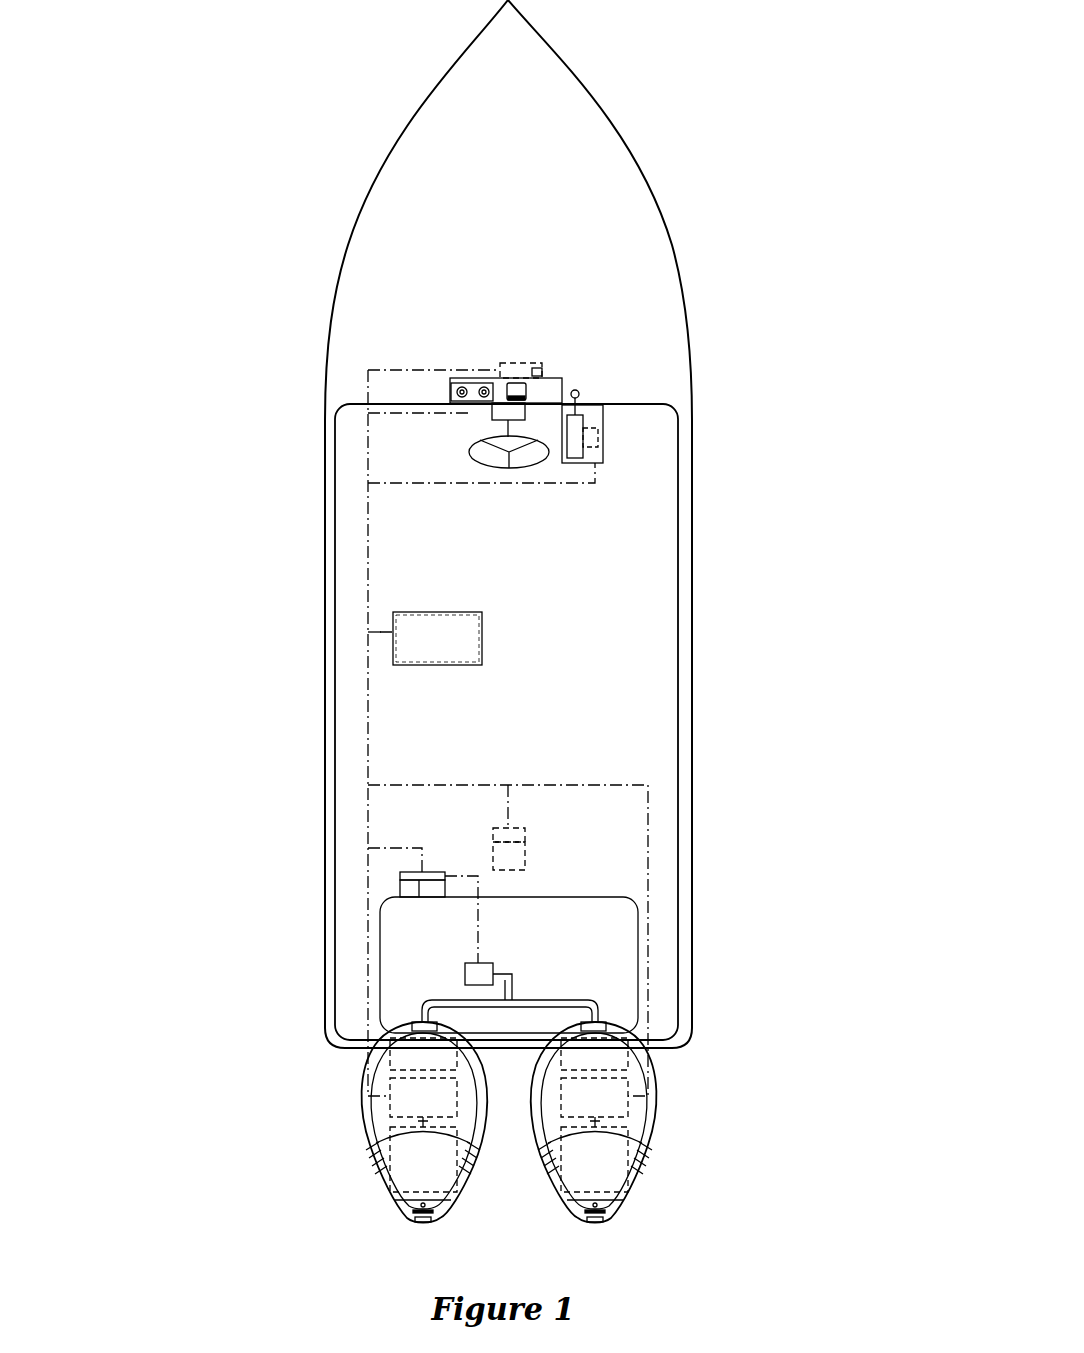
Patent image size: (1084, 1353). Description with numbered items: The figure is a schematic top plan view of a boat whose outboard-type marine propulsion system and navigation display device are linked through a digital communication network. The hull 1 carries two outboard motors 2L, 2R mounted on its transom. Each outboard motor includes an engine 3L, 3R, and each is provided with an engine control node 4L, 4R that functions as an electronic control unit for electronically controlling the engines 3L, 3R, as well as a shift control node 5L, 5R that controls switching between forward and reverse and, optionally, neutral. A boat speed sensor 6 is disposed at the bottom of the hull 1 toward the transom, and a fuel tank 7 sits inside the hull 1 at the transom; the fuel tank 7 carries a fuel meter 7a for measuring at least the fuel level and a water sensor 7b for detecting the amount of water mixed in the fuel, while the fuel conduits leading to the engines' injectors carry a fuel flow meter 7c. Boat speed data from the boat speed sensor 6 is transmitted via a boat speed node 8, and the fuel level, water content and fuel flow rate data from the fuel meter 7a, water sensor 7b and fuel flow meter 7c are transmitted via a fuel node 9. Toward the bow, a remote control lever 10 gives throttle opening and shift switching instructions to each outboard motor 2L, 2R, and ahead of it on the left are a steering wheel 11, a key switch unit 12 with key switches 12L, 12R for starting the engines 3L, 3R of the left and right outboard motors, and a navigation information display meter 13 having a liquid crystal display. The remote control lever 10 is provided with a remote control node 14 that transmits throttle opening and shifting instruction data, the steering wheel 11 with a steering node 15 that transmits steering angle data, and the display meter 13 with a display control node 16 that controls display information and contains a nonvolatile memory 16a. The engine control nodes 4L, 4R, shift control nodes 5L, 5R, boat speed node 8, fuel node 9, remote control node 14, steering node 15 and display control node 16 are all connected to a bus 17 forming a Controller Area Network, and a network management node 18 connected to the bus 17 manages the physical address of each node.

The hull 1 is at (358, 272).
The left outboard motor 2L is at (386, 1122).
The right outboard motor 2R is at (634, 1122).
The left engine 3L is at (398, 1178).
The right engine 3R is at (620, 1178).
The left engine control node 4L is at (390, 1108).
The right engine control node 4R is at (628, 1108).
The left shift control node 5L is at (390, 1050).
The right shift control node 5R is at (628, 1050).
The boat speed sensor 6 is at (525, 858).
The fuel tank 7 is at (640, 948).
The fuel meter 7a is at (400, 888).
The water sensor 7b is at (431, 897).
The fuel flow meter 7c is at (465, 975).
The boat speed node 8 is at (525, 835).
The fuel node 9 is at (437, 872).
The remote control lever 10 is at (579, 394).
The steering wheel 11 is at (470, 458).
The key switch unit 12 is at (462, 386).
The left key switch 12L is at (462, 387).
The right key switch 12R is at (484, 387).
The navigation information display meter 13 is at (513, 383).
The remote control node 14 is at (598, 437).
The steering node 15 is at (492, 412).
The display control node 16 is at (524, 363).
The nonvolatile memory 16a is at (542, 372).
The bus 17 is at (369, 722).
The network management node 18 is at (466, 612).